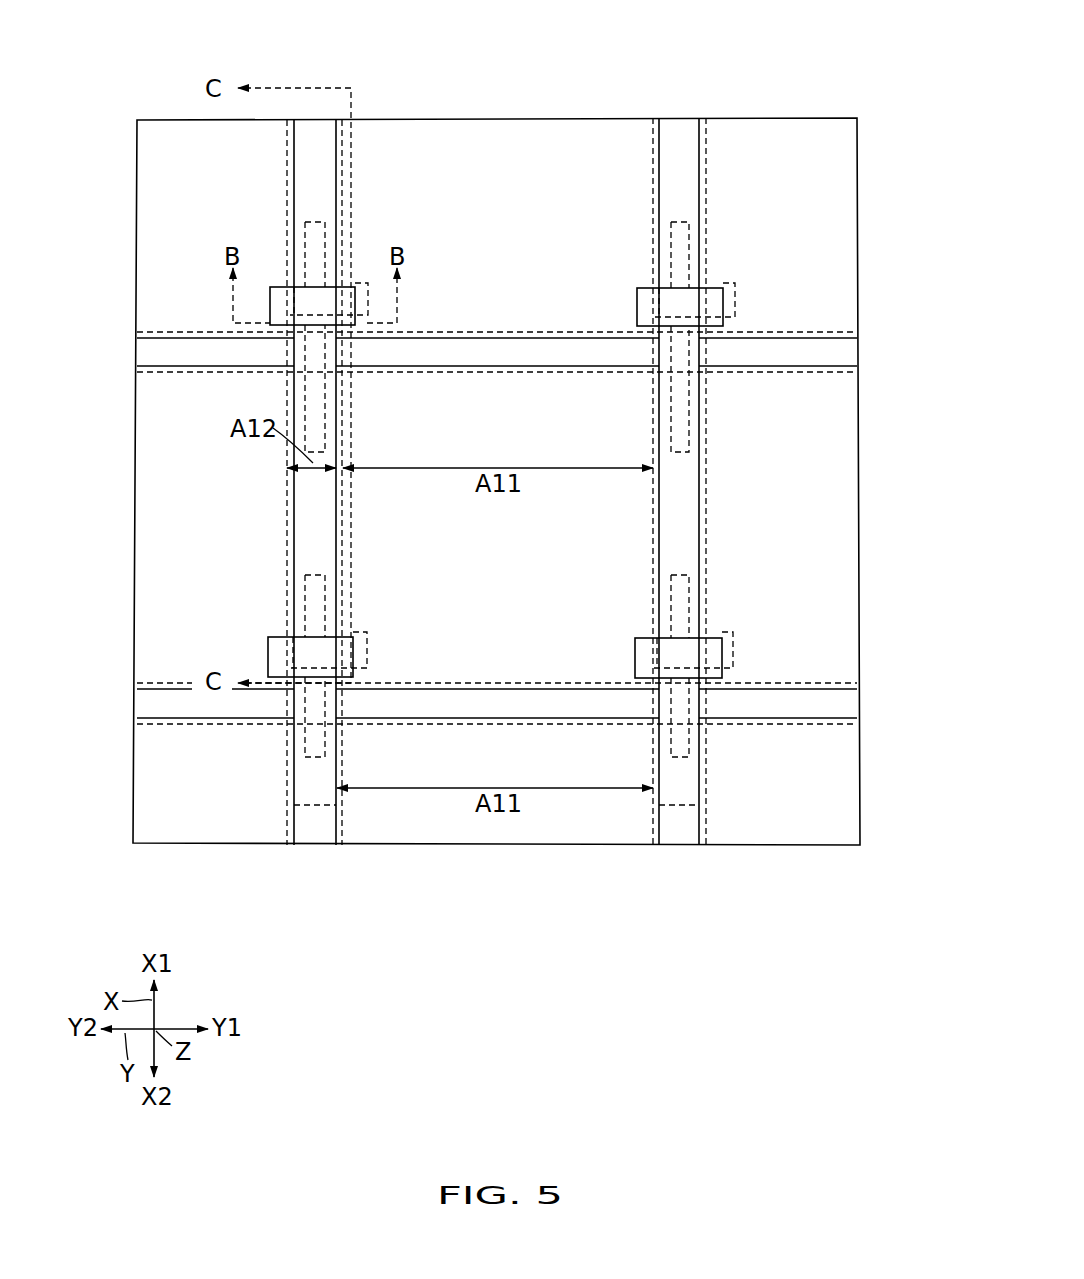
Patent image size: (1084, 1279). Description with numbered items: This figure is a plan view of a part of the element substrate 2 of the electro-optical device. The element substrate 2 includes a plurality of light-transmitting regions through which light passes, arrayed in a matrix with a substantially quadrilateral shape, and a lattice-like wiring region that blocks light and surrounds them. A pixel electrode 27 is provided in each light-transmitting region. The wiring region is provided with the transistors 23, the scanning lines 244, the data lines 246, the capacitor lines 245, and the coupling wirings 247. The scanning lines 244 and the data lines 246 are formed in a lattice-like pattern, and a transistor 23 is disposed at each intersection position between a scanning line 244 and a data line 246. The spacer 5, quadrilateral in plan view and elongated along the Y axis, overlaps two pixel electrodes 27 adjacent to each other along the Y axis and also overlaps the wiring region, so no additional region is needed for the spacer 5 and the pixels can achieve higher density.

The element substrate 2 is at (764, 115).
The spacer 5 is at (280, 300).
The transistor 23 is at (336, 170).
The pixel electrode 27 is at (542, 362).
The scanning line 244 is at (497, 482).
The capacitor line 245 is at (495, 330).
The data line 246 is at (287, 143).
The coupling wiring 247 is at (270, 300).